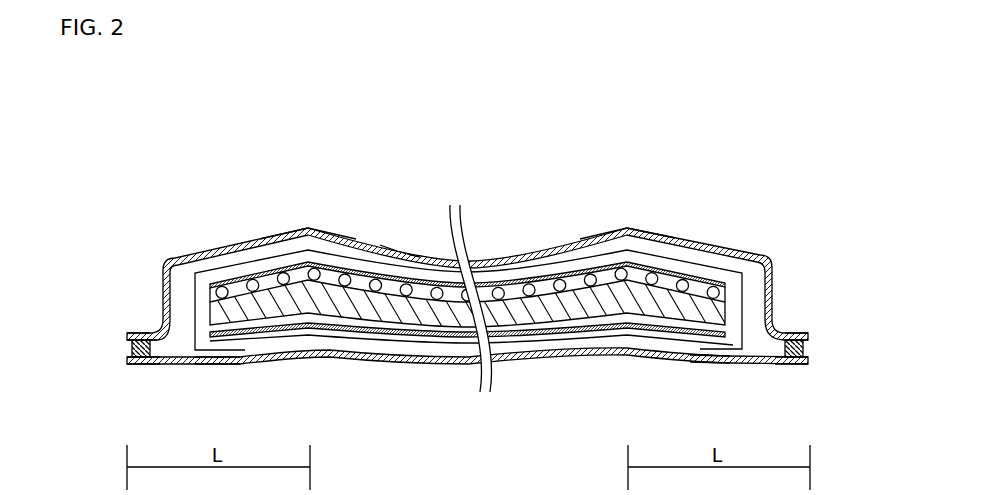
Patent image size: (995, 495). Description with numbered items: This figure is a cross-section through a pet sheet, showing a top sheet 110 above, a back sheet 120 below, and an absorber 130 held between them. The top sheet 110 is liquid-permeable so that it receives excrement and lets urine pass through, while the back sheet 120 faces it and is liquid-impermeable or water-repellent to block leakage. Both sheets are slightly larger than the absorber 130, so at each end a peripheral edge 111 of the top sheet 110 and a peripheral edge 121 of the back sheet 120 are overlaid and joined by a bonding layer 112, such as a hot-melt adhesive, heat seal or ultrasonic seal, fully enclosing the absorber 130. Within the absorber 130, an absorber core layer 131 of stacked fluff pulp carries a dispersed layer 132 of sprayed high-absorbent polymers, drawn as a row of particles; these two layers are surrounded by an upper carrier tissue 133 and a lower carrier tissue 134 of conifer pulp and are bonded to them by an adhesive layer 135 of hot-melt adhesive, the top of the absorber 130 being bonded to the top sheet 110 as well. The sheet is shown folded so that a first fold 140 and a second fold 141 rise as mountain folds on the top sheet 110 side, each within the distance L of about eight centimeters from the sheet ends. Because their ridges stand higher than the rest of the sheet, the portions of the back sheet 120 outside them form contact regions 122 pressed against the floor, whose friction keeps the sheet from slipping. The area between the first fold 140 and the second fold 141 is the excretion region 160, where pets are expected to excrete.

The top sheet 110 is at (190, 256).
The peripheral edge of the top sheet 111 is at (136, 333).
The bonding layer 112 is at (130, 349).
The back sheet 120 is at (409, 364).
The peripheral edge of the back sheet 121 is at (138, 366).
The contact region 122 is at (218, 372).
The absorber 130 is at (754, 290).
The absorber core layer 131 is at (697, 303).
The dispersed layer 132 is at (653, 281).
The upper carrier tissue 133 is at (570, 268).
The lower carrier tissue 134 is at (578, 344).
The adhesive layer 135 is at (508, 283).
The first fold 140 is at (621, 215).
The second fold 141 is at (302, 215).
The excretion region 160 is at (410, 239).